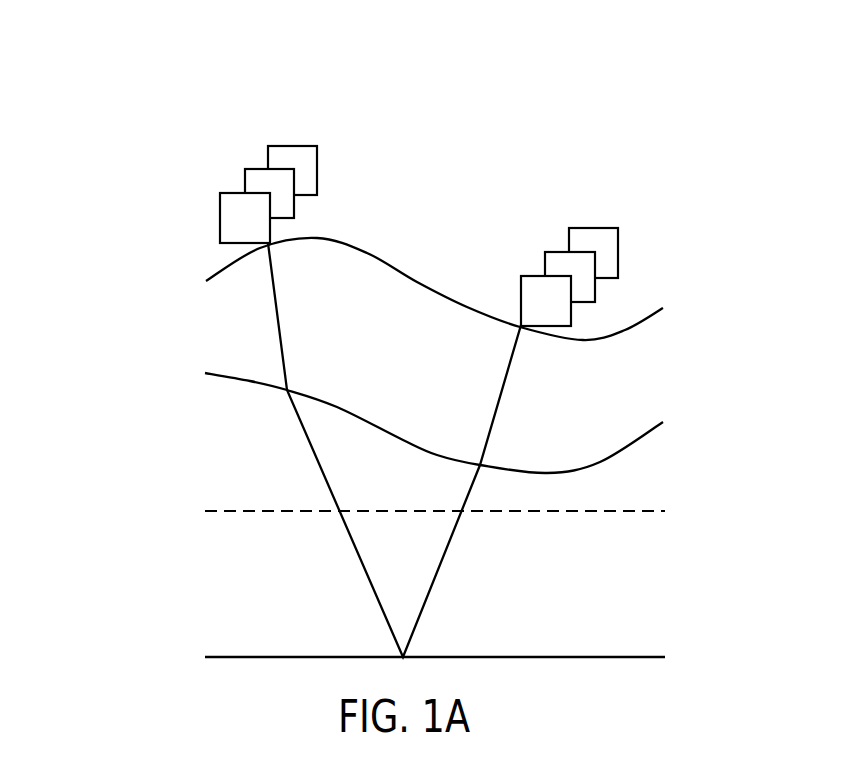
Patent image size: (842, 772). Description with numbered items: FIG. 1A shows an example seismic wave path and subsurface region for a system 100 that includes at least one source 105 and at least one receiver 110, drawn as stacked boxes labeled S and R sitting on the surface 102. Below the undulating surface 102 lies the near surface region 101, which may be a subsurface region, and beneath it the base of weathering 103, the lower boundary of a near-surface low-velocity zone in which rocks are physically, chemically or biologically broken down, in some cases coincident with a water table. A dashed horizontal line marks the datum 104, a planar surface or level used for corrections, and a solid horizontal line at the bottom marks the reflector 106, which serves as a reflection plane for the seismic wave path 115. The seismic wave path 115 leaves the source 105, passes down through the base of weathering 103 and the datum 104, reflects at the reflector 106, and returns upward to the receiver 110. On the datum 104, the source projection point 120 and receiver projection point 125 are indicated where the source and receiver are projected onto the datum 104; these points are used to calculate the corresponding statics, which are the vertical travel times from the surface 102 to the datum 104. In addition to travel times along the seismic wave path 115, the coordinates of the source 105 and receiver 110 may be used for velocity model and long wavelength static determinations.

The system 100 is at (81, 54).
The near surface region 101 is at (711, 351).
The surface 102 is at (222, 270).
The base of weathering 103 is at (220, 375).
The datum 104 is at (218, 510).
The source 105 is at (308, 118).
The reflector 106 is at (220, 656).
The receiver 110 is at (607, 200).
The seismic wave path 115 is at (282, 328).
The source projection point 120 is at (278, 510).
The receiver projection point 125 is at (584, 511).